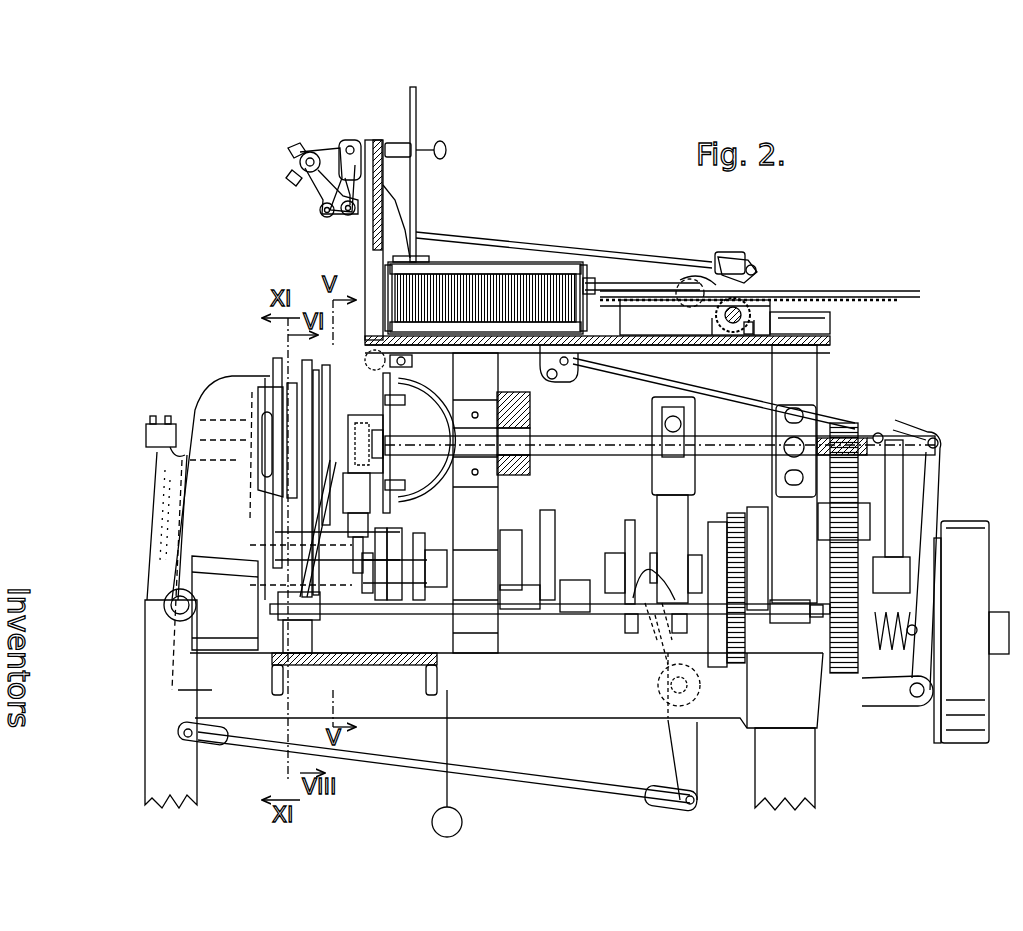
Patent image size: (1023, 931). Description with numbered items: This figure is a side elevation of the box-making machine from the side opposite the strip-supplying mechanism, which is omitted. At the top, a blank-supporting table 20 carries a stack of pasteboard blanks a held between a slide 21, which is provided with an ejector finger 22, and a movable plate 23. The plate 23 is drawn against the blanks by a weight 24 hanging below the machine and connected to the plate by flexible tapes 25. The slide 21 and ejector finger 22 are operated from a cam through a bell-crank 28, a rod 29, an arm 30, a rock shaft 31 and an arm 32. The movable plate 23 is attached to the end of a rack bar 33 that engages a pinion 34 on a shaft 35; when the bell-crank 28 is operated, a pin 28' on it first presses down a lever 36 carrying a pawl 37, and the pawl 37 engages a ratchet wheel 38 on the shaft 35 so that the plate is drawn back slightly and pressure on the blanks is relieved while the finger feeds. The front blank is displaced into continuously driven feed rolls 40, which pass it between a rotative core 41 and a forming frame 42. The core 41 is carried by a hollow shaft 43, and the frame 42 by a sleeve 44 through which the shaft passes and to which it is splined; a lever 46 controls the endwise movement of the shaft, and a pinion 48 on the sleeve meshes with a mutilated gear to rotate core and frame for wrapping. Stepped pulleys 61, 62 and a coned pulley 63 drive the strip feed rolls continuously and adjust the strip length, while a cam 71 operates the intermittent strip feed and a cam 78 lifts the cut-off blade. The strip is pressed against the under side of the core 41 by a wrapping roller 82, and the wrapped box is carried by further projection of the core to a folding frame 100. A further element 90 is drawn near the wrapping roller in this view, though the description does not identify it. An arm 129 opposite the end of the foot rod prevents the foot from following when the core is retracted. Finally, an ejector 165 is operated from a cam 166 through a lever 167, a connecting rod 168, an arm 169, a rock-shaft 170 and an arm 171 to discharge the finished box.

The blank-supporting table 20 is at (606, 348).
The slide 21 is at (372, 225).
The ejector finger 22 is at (412, 258).
The movable plate 23 is at (578, 280).
The weight 24 is at (462, 822).
The flexible tapes 25 is at (449, 735).
The bell-crank 28 is at (763, 270).
The pin 28' is at (742, 244).
The rod 29 is at (508, 242).
The arm 30 is at (318, 196).
The rock shaft 31 is at (298, 160).
The arm 32 is at (330, 152).
The rack bar 33 is at (900, 293).
The pinion 34 is at (716, 336).
The shaft 35 is at (732, 333).
The lever 36 is at (706, 283).
The pawl 37 is at (828, 312).
The ratchet wheel 38 is at (748, 336).
The feed rolls 40 is at (380, 360).
The rotative core 41 is at (357, 408).
The forming frame 42 is at (386, 402).
The hollow shaft 43 is at (618, 455).
The sleeve 44 is at (490, 460).
The lever 46 is at (692, 500).
The pinion 48 is at (512, 394).
The stepped pulley 61 is at (745, 513).
The stepped pulley 62 is at (740, 655).
The coned pulley 63 is at (212, 560).
The cam 71 is at (552, 540).
The cam 78 is at (396, 540).
The wrapping roller 82 is at (350, 490).
The roller 90 is at (428, 550).
The folding frame 100 is at (335, 360).
The arm 129 is at (880, 446).
The ejector 165 is at (144, 434).
The cam 166 is at (628, 530).
The lever 167 is at (697, 760).
The connecting rod 168 is at (578, 792).
The arm 169 is at (208, 690).
The rock-shaft 170 is at (164, 603).
The arm 171 is at (156, 500).
The pasteboard blanks a is at (505, 285).